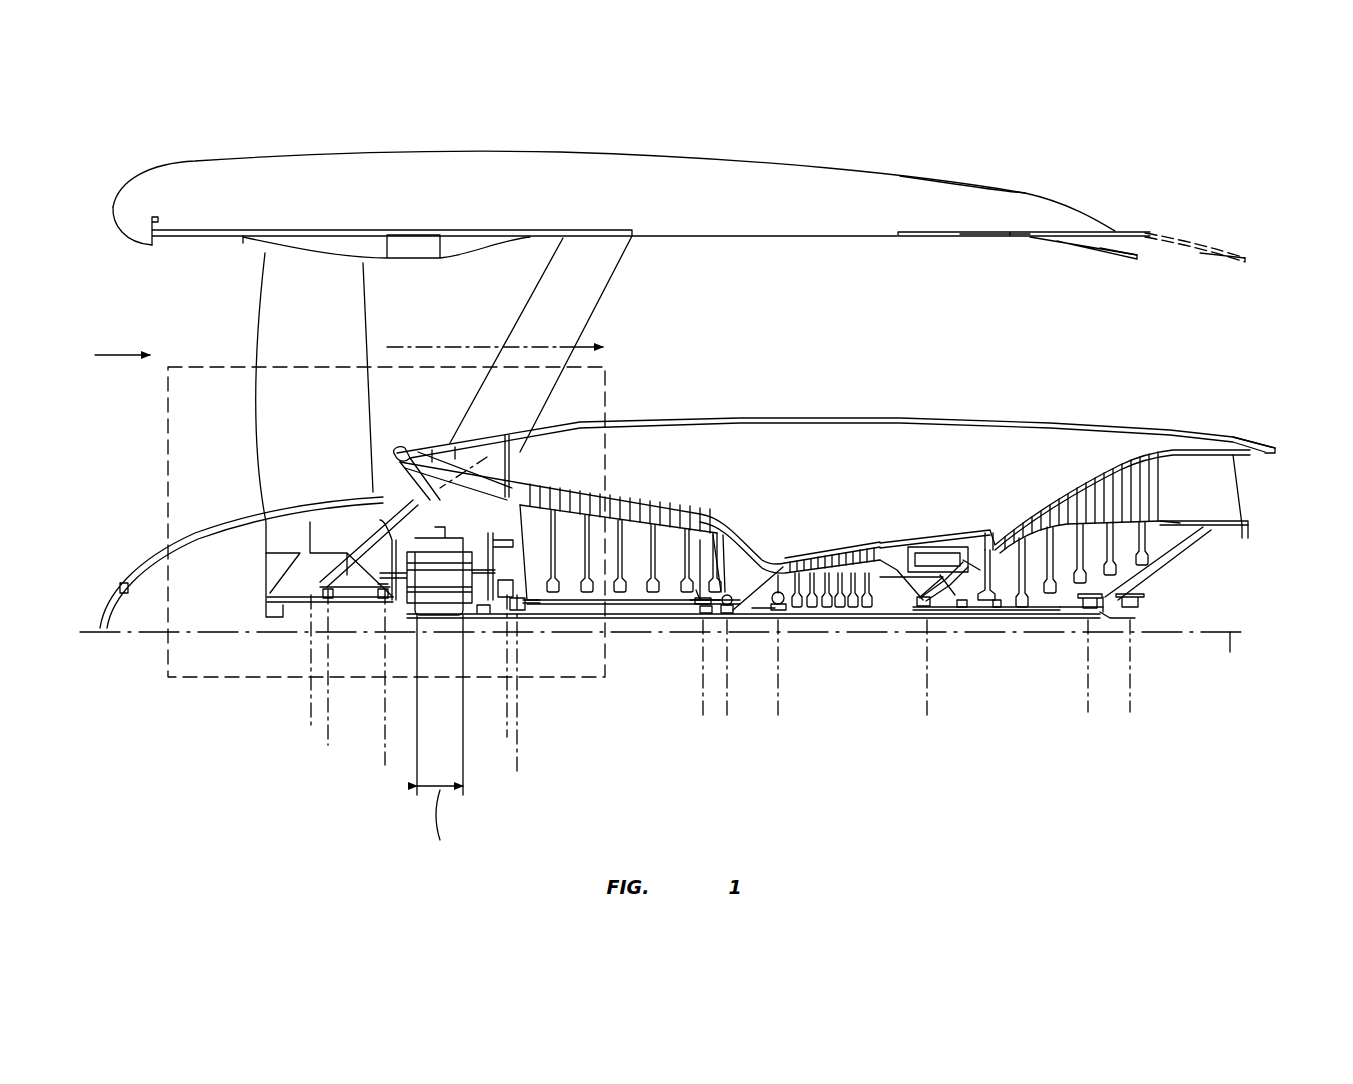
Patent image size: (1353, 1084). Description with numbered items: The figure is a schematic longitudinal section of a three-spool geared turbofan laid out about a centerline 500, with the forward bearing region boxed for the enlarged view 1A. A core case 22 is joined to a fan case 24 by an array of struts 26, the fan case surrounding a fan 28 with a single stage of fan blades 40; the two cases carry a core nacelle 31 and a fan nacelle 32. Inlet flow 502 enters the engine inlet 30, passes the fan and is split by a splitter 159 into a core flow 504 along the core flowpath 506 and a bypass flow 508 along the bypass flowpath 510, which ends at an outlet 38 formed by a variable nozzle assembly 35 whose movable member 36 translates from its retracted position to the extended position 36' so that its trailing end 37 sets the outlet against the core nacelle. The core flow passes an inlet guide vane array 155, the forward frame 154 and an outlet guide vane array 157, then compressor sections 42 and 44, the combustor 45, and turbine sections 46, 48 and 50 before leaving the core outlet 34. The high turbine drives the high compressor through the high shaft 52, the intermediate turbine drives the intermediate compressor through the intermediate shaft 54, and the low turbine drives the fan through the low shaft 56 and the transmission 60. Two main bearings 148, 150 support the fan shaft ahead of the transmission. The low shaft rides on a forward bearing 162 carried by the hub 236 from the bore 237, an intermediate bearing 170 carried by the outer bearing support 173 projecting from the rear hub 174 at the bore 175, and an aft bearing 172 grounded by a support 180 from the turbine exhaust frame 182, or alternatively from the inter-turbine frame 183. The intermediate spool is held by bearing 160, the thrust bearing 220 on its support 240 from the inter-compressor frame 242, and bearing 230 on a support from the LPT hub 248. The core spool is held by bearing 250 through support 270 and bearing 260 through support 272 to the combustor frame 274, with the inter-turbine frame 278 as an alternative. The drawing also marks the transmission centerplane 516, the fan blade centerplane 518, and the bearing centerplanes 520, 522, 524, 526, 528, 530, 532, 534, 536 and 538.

The core case 22 is at (738, 520).
The fan case 24 is at (458, 230).
The struts 26 is at (586, 290).
The fan 28 is at (282, 408).
The engine inlet 30 is at (100, 218).
The core nacelle 31 is at (962, 417).
The fan nacelle 32 is at (1035, 175).
The core outlet 34 is at (1287, 468).
The variable nozzle assembly 35 is at (1013, 266).
The movable member 36 is at (1083, 277).
The movable member in extended position 36' is at (1195, 212).
The trailing end 37 is at (1137, 262).
The outlet 38 is at (1276, 285).
The fan blades 40 is at (278, 476).
The intermediate pressure compressor section 42 is at (637, 503).
The high pressure compressor section 44 is at (834, 552).
The combustor 45 is at (936, 548).
The high pressure turbine section 46 is at (982, 538).
The intermediate pressure turbine section 48 is at (1050, 506).
The low pressure turbine section 50 is at (1137, 478).
The high shaft 52 is at (903, 598).
The intermediate shaft 54 is at (782, 592).
The low shaft 56 is at (640, 624).
The transmission 60 is at (410, 612).
The main bearing 148 is at (327, 600).
The main bearing 150 is at (383, 602).
The forward frame 154 is at (500, 460).
The inlet guide vane array 155 is at (425, 482).
The outlet guide vane array 157 is at (517, 475).
The splitter 159 is at (408, 466).
The forward bearing 160 is at (505, 598).
The forward bearing 162 is at (525, 606).
The intermediate bearing 170 is at (700, 622).
The aft bearing 172 is at (1132, 616).
The outer bearing support 173 is at (724, 578).
The rear hub 174 is at (696, 592).
The bore 175 is at (694, 605).
The support 180 is at (1180, 557).
The turbine exhaust frame 182 is at (1222, 485).
The inter-turbine frame 183 is at (1065, 510).
The intermediate bearing 220 is at (732, 612).
The aft bearing 230 is at (1085, 612).
The hub 236 is at (543, 588).
The bore 237 is at (567, 582).
The support 240 is at (742, 593).
The inter-compressor frame 242 is at (762, 553).
The hub 248 is at (1127, 565).
The forward bearing 250 is at (780, 612).
The aft bearing 260 is at (930, 607).
The support 270 is at (832, 553).
The support 272 is at (955, 612).
The combustor frame 274 is at (962, 543).
The inter-turbine frame 278 is at (1005, 598).
The centerline 500 is at (1230, 652).
The inlet flow 502 is at (118, 370).
The core flow 504 is at (357, 470).
The core flowpath 506 is at (488, 455).
The bypass flow 508 is at (590, 344).
The bypass flowpath 510 is at (410, 338).
The transmission centerplane 516 is at (440, 690).
The fan blade array centerplane 518 is at (311, 710).
The bearing centerplane 520 is at (328, 745).
The bearing centerplane 522 is at (385, 765).
The bearing centerplane 524 is at (517, 775).
The bearing centerplane 526 is at (507, 737).
The bearing centerplane 528 is at (703, 715).
The bearing centerplane 530 is at (727, 715).
The bearing centerplane 532 is at (778, 718).
The bearing centerplane 534 is at (927, 718).
The bearing centerplane 536 is at (1088, 712).
The bearing centerplane 538 is at (1130, 712).
The detail view reference 1A is at (612, 420).